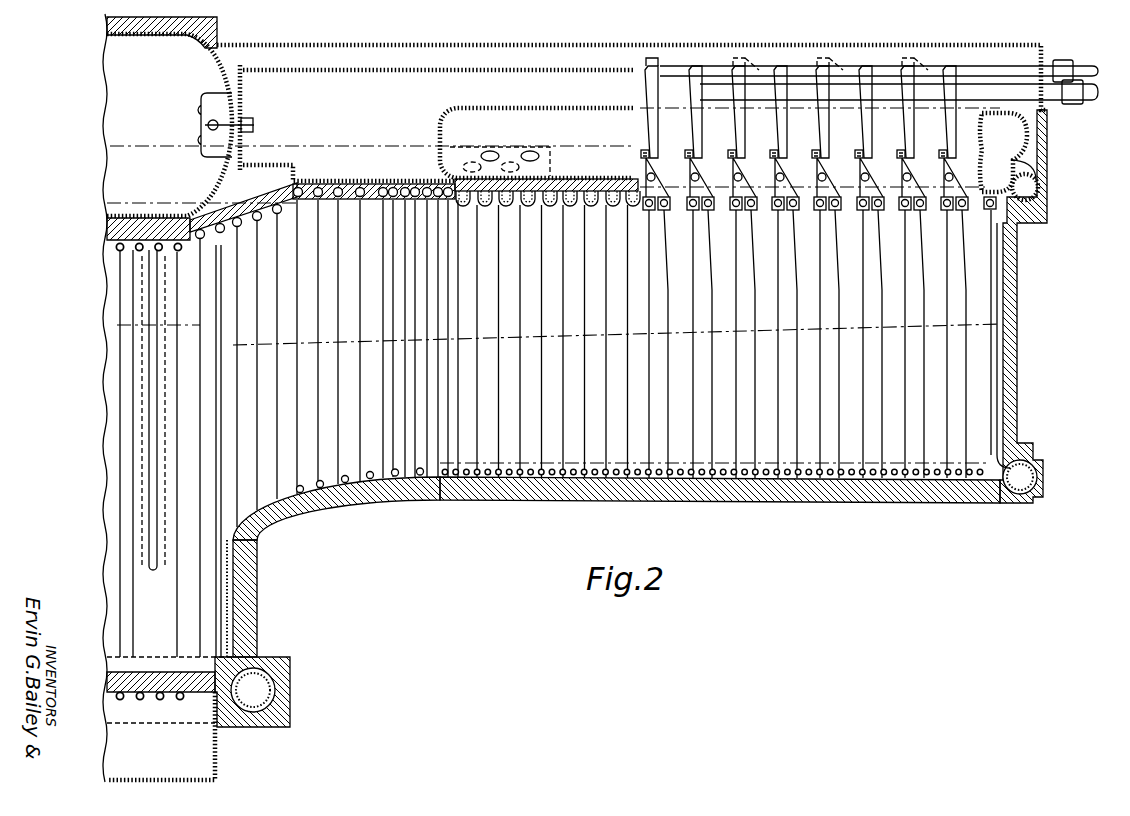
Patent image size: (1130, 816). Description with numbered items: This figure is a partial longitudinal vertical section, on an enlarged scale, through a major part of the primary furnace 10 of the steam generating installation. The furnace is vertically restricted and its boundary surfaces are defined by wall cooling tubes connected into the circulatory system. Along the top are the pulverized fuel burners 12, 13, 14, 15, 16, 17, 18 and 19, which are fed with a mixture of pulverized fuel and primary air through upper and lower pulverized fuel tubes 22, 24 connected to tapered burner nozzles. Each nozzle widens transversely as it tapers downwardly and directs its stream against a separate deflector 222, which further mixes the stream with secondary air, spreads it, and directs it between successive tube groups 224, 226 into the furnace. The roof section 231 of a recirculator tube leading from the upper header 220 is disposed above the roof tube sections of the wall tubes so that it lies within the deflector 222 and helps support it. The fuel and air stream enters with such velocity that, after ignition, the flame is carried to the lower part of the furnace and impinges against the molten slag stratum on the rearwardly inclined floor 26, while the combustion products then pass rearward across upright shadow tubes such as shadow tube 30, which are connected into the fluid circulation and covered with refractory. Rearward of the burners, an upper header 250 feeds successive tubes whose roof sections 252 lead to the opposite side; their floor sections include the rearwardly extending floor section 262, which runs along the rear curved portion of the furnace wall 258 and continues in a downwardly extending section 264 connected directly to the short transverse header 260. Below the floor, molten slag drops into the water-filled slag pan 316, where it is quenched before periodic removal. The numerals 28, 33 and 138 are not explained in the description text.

The primary furnace 10 is at (632, 347).
The pulverized fuel burner 12 is at (946, 130).
The pulverized fuel burner 13 is at (904, 130).
The pulverized fuel burner 14 is at (862, 130).
The pulverized fuel burner 15 is at (819, 130).
The pulverized fuel burner 16 is at (777, 130).
The pulverized fuel burner 17 is at (735, 130).
The pulverized fuel burner 18 is at (692, 130).
The pulverized fuel burner 19 is at (652, 126).
The upper pulverized fuel tube 22 is at (1088, 66).
The lower pulverized fuel tube 24 is at (1090, 102).
The rearwardly inclined floor 26 is at (722, 463).
The bottom header wall 28 is at (745, 500).
The upright shadow tube 30 is at (172, 342).
The tube 33 is at (162, 378).
The upper header 138 is at (122, 35).
The upper header 220 is at (598, 108).
The deflector 222 is at (710, 211).
The tube group 224 is at (667, 212).
The tube group 226 is at (648, 209).
The recirculator tube roof section 231 is at (654, 176).
The upper header 250 is at (367, 151).
The roof tube section 252 is at (392, 213).
The rear curved portion of primary furnace wall 258 is at (280, 536).
The header 260 is at (268, 687).
The rearwardly extending floor section 262 is at (390, 500).
The downwardly extending section 264 is at (235, 590).
The slag pan 316 is at (178, 759).